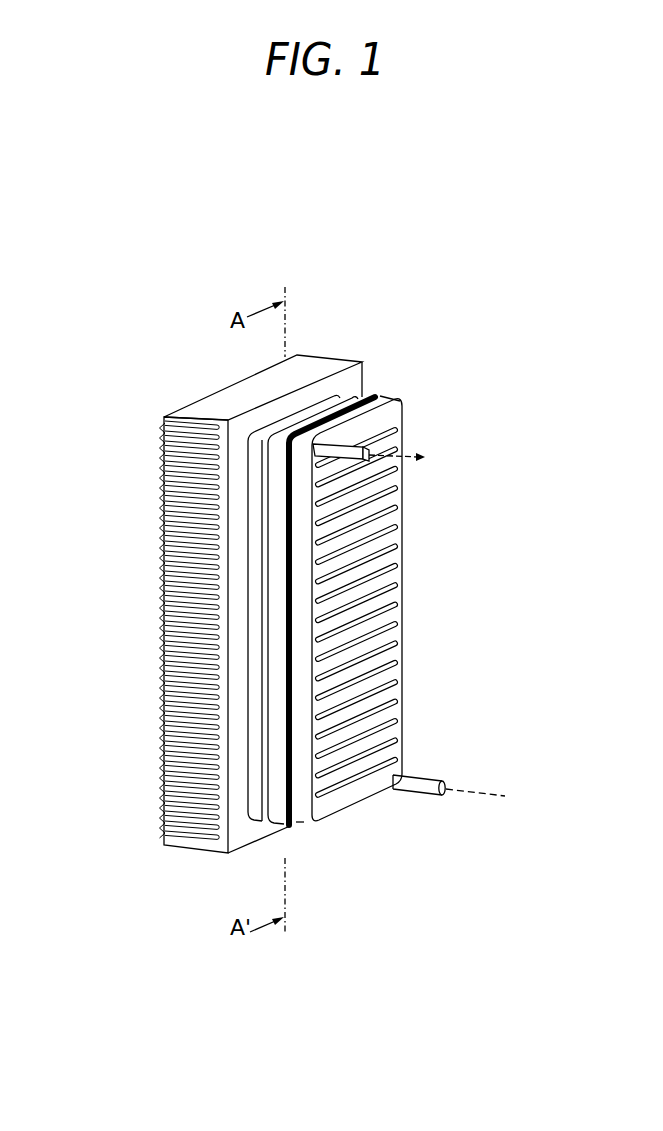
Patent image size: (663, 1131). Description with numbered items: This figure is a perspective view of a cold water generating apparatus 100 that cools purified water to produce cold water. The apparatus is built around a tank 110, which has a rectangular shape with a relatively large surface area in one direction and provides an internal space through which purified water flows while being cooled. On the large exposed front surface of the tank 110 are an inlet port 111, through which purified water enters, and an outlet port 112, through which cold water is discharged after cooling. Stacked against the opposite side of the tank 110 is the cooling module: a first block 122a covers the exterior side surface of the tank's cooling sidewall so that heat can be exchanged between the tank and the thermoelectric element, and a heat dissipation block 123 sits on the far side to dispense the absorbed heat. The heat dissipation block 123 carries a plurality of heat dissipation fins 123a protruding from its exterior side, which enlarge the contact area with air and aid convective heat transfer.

The cold water generating apparatus 100 is at (163, 336).
The tank 110 is at (404, 578).
The inlet port 111 is at (447, 786).
The outlet port 112 is at (372, 447).
The first block 122a is at (258, 775).
The heat dissipation block 123 is at (165, 570).
The heat dissipation fins 123a is at (165, 515).